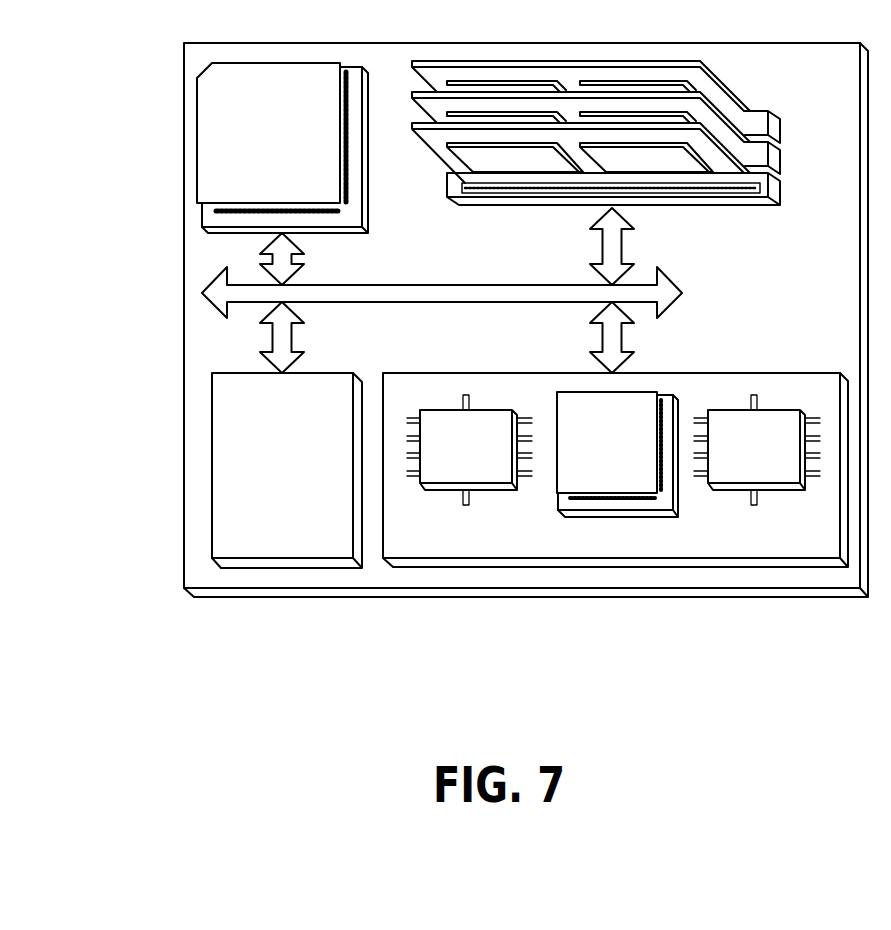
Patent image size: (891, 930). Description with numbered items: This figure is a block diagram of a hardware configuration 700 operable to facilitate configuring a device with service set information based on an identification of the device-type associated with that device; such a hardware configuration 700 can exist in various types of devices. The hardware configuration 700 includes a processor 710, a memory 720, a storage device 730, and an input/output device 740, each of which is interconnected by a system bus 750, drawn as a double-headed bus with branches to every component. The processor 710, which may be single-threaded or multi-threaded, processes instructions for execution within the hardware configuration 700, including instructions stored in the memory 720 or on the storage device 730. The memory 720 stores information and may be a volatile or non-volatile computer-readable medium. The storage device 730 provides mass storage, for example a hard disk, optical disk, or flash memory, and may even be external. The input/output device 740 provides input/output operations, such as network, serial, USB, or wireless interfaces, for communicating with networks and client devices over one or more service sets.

The hardware configuration 700 is at (139, 632).
The processor 710 is at (327, 195).
The memory 720 is at (743, 104).
The storage device 730 is at (340, 551).
The input/output device 740 is at (806, 373).
The system bus 750 is at (437, 302).